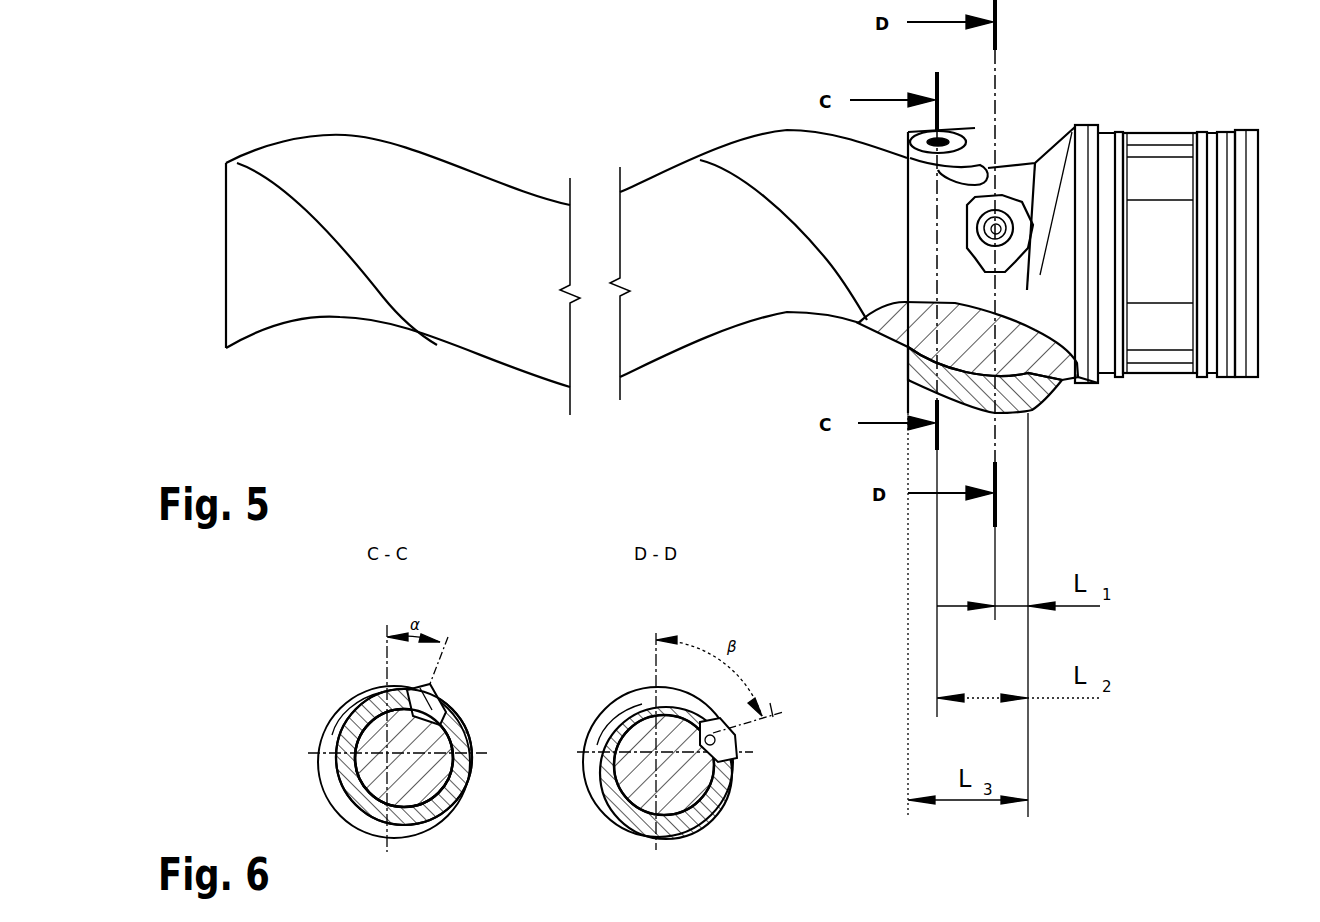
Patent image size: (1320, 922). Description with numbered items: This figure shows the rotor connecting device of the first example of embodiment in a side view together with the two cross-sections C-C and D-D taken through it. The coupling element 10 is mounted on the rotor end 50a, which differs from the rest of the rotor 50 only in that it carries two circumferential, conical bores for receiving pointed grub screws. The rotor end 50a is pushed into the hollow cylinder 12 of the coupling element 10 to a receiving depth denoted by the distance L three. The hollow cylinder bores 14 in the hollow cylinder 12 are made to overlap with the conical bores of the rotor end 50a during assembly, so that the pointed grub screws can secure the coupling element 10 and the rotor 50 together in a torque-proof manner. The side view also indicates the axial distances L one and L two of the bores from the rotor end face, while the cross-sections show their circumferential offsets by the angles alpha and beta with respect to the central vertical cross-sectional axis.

In FIG. 5, the rotor 50 is at (248, 112).
In FIG. 5, the coupling element 10 is at (1185, 110).
In FIG. 5, the hollow cylinder bores 14 is at (995, 208).
In FIG. 6, the hollow cylinder bores 14 is at (655, 718).
In FIG. 6, the rotor end 50a is at (637, 767).
In FIG. 6, the hollow cylinder 12 is at (437, 807).